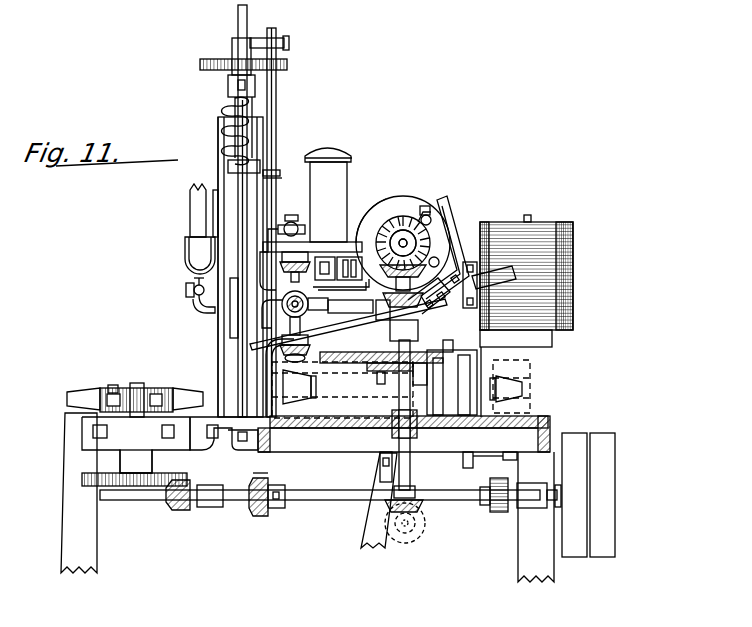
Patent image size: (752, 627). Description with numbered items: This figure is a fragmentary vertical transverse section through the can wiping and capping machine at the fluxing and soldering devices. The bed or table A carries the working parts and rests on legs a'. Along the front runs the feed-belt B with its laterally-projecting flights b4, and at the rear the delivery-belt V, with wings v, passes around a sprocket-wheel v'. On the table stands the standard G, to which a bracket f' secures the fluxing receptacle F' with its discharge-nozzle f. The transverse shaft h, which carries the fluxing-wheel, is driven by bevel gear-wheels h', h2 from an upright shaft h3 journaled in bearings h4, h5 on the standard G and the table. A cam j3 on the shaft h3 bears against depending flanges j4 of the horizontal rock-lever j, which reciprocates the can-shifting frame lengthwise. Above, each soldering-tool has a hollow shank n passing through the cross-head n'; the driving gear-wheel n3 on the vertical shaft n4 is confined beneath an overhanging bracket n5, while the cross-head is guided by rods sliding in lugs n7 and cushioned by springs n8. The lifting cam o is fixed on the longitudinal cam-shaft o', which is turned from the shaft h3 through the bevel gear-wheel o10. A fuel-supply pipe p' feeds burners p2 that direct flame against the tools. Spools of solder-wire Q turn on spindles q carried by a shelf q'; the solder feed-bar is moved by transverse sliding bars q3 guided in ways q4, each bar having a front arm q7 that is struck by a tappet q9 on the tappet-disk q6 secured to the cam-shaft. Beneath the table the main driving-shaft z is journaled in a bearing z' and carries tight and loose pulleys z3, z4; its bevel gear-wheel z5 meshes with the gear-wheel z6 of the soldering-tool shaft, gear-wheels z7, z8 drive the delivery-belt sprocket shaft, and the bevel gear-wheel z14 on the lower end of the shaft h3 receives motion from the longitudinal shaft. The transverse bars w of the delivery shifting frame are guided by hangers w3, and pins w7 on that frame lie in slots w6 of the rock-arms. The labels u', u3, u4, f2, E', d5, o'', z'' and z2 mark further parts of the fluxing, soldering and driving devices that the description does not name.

The hollow shank n is at (234, 211).
The cross-head n' is at (225, 87).
The driving gear-wheel n3 is at (200, 64).
The vertical shaft n4 is at (267, 330).
The overhanging bracket n5 is at (236, 52).
The guide-lugs n7 is at (228, 165).
The springs n8 is at (232, 108).
The bracket u' is at (269, 27).
The column u3 is at (277, 98).
The stop u4 is at (268, 178).
The fuel-supply pipe p' is at (188, 229).
The burners p2 is at (198, 304).
The standard G is at (218, 349).
The cylinder F' is at (312, 200).
The discharge-nozzle f is at (286, 216).
The bracket f' is at (338, 238).
The cup f2 is at (278, 258).
The gear E' is at (293, 314).
The pipe d5 is at (270, 378).
The cam o is at (403, 251).
The longitudinal shaft o' is at (400, 207).
The ring o'' is at (412, 211).
The bevel gear-wheel o10 is at (436, 262).
The vertical spindles q is at (538, 211).
The shelf q' is at (530, 373).
The transverse sliding bars q3 is at (534, 288).
The ways q4 is at (470, 308).
The tappet-disk q6 is at (381, 208).
The front arm q7 is at (448, 240).
The tappet q9 is at (432, 212).
The spools of solder-wire Q is at (537, 276).
The transverse shaft h is at (348, 328).
The bevel gear-wheel h' is at (430, 303).
The bevel gear-wheel h2 is at (352, 318).
The upright shaft h3 is at (411, 472).
The bearing h4 is at (397, 320).
The bearing h5 is at (418, 432).
The horizontal rock-lever j is at (333, 362).
The cam j3 is at (422, 372).
The depending flanges j4 is at (366, 372).
The feed-belt B is at (342, 390).
The flights b4 is at (525, 386).
The table A is at (548, 418).
The supporting-legs a' is at (66, 493).
The wings v is at (124, 394).
The sprocket-wheel v' is at (137, 389).
The delivery-belt V is at (108, 390).
The main driving-shaft z is at (320, 506).
The bearing z' is at (539, 495).
The gear z'' is at (494, 506).
The bearing z2 is at (212, 508).
The tight pulley z3 is at (574, 495).
The loose pulley z4 is at (602, 495).
The bevel gear-wheel z5 is at (266, 512).
The bevel gear-wheel z6 is at (262, 470).
The gear-wheel z7 is at (176, 510).
The gear-wheel z8 is at (128, 487).
The bevel gear-wheel z14 is at (420, 508).
The transverse bars w is at (510, 456).
The hangers w3 is at (467, 462).
The slots w6 is at (375, 472).
The pins w7 is at (380, 462).